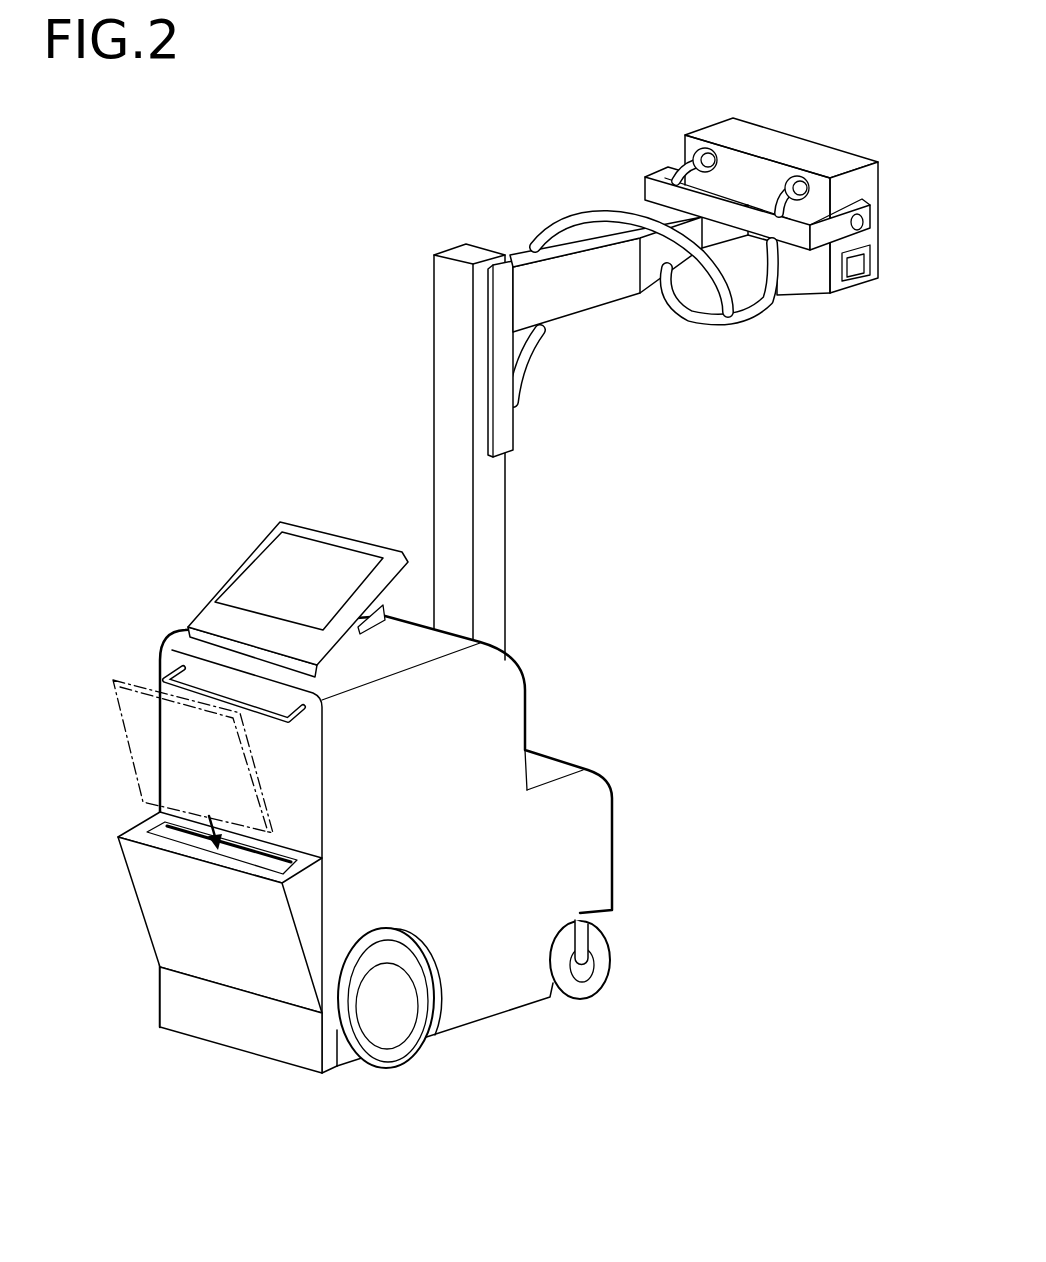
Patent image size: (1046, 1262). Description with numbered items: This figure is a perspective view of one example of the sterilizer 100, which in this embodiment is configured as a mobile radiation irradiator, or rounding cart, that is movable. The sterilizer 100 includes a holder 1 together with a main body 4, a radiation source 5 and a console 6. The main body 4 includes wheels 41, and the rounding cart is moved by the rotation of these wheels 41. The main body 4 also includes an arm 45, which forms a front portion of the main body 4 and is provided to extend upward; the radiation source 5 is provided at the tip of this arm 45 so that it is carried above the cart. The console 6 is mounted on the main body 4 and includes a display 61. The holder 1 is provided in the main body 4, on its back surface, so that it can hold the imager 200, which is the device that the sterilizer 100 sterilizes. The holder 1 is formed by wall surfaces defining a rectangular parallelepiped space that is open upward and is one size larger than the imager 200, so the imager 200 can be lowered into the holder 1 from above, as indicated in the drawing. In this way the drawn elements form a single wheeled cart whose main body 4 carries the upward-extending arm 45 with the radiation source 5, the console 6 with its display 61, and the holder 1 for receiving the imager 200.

The sterilizer 100 is at (215, 215).
The radiation source 5 is at (800, 147).
The arm 45 is at (446, 423).
The console 6 is at (236, 546).
The display 61 is at (307, 567).
The imager 200 is at (113, 680).
The holder 1 is at (160, 835).
The main body 4 is at (545, 711).
The wheels 41 is at (393, 1052).